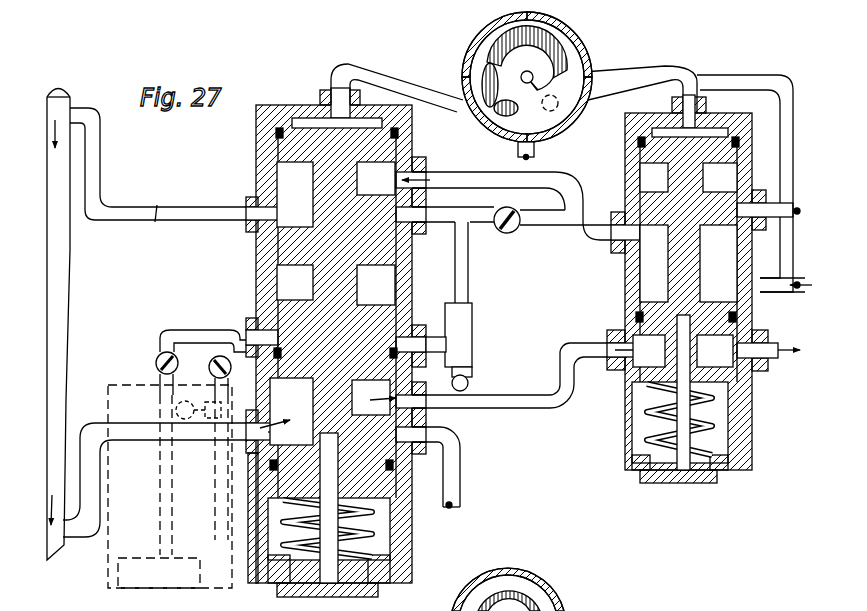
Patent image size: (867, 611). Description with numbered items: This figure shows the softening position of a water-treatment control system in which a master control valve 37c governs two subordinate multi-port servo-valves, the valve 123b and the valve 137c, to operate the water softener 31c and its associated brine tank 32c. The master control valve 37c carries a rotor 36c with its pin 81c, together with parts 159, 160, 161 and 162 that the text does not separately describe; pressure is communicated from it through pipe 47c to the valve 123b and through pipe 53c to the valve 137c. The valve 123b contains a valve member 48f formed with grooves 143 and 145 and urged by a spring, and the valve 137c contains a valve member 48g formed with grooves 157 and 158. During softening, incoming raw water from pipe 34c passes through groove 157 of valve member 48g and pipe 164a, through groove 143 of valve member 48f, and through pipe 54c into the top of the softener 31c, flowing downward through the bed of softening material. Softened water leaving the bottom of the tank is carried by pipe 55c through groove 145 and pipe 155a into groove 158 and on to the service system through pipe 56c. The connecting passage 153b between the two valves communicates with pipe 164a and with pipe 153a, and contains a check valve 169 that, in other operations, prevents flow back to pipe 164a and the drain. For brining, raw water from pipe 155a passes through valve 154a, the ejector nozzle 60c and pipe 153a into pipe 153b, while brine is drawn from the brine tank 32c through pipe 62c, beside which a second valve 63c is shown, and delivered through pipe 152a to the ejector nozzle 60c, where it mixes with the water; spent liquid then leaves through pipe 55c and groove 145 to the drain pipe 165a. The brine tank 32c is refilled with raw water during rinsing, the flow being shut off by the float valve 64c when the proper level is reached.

The water softener 31c is at (66, 298).
The brine tank 32c is at (118, 548).
The raw water supply pipe 34c is at (786, 295).
The rotor 36c is at (517, 138).
The master control valve 37c is at (592, 68).
The pressure conduit 47c is at (405, 78).
The valve member 48f is at (400, 322).
The valve member 48g is at (622, 395).
The pipe 53c is at (536, 150).
The pipe 54c is at (124, 210).
The pipe 55c is at (136, 440).
The service pipe 56c is at (778, 362).
The ejector nozzle 60c is at (464, 348).
The pipe 62c is at (156, 370).
The valve 63c is at (207, 375).
The float valve 64c is at (210, 417).
The pin 81c is at (534, 91).
The multi-port valve 123b is at (262, 283).
The valve housing 137c is at (752, 172).
The groove 143 is at (262, 182).
The groove 145 is at (258, 457).
The pipe 152a is at (455, 322).
The pipe 153a is at (469, 260).
The connecting passage 153b is at (537, 232).
The valve 154a is at (470, 383).
The pipe 155a is at (495, 405).
The groove 157 is at (730, 272).
The groove 158 is at (715, 333).
The cam lobe 159 is at (482, 115).
The cam 160 is at (580, 115).
The cam lobe 161 is at (494, 62).
The dial ring 162 is at (572, 40).
The pipe 164a is at (560, 174).
The drain pipe 165a is at (462, 480).
The check valve 169 is at (498, 209).